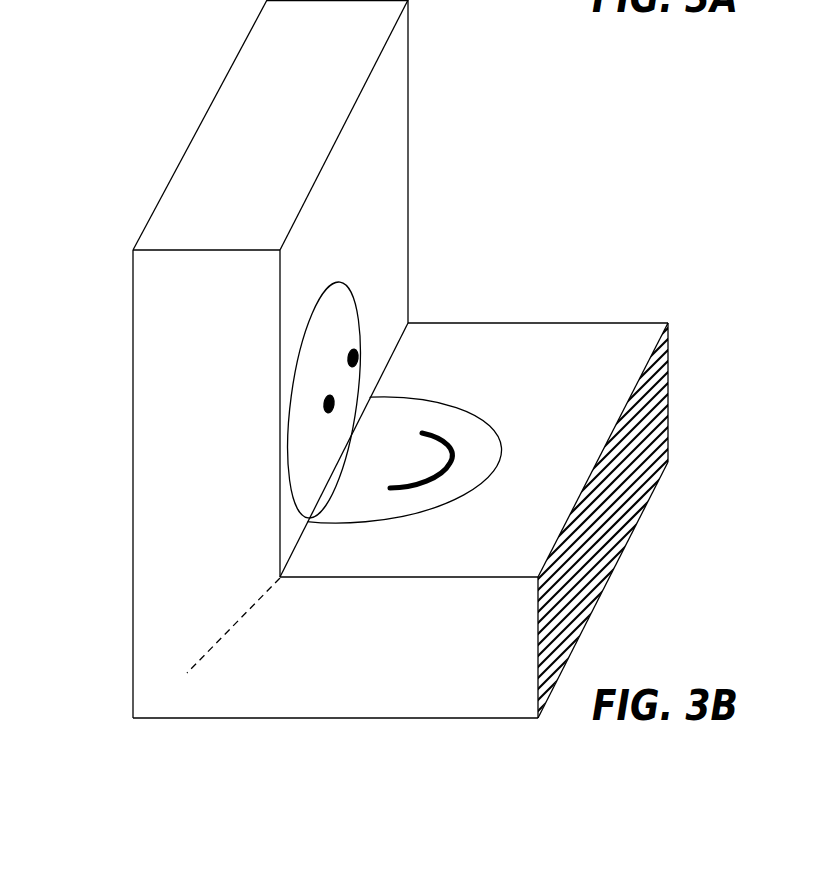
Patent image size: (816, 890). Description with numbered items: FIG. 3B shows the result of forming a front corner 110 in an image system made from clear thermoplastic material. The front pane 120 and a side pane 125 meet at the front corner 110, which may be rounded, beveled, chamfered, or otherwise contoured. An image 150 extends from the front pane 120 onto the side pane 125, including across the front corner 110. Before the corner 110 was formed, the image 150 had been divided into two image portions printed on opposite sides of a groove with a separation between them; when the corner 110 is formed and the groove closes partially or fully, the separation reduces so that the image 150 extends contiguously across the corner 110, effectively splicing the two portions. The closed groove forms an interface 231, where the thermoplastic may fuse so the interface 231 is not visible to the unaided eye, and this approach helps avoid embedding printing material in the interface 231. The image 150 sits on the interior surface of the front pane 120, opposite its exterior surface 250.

The front corner 110 is at (429, 392).
The side pane 125 is at (116, 423).
The front pane 120 is at (441, 742).
The image 150 is at (395, 277).
The interface 231 is at (251, 660).
The exterior surface 250 is at (113, 6).